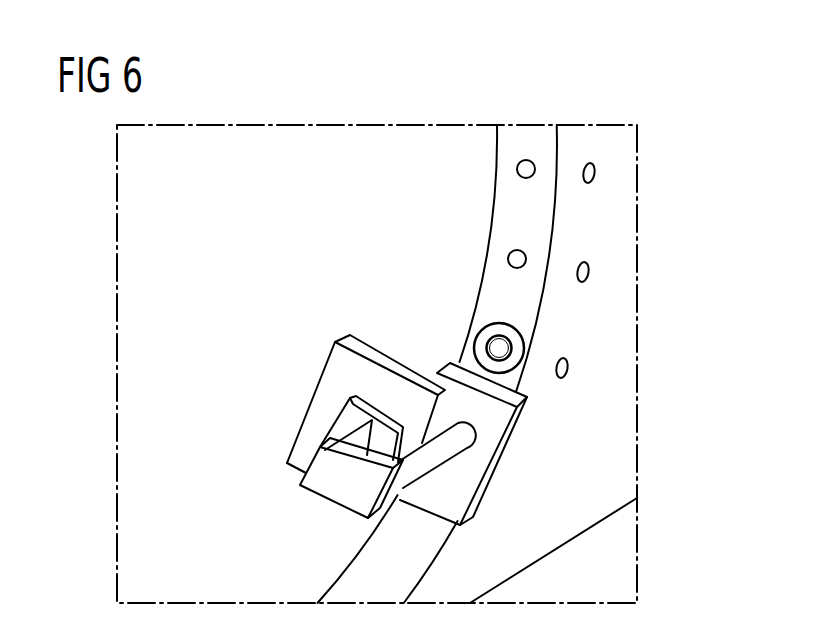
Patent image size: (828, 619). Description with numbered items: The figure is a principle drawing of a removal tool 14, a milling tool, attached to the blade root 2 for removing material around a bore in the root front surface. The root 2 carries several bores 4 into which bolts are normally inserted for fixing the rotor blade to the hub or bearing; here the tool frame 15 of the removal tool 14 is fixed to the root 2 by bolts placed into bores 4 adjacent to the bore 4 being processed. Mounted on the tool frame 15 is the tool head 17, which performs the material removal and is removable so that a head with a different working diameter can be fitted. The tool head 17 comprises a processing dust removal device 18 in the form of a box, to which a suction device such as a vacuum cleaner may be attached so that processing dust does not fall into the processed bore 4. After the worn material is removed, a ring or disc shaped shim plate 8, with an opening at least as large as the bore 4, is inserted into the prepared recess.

The root 2 is at (622, 278).
The bores 4 is at (517, 169).
The shim plate 8 is at (483, 337).
The removal tool 14 is at (437, 453).
The tool frame 15 is at (338, 373).
The tool head 17 is at (343, 497).
The processing dust removal device 18 is at (510, 428).